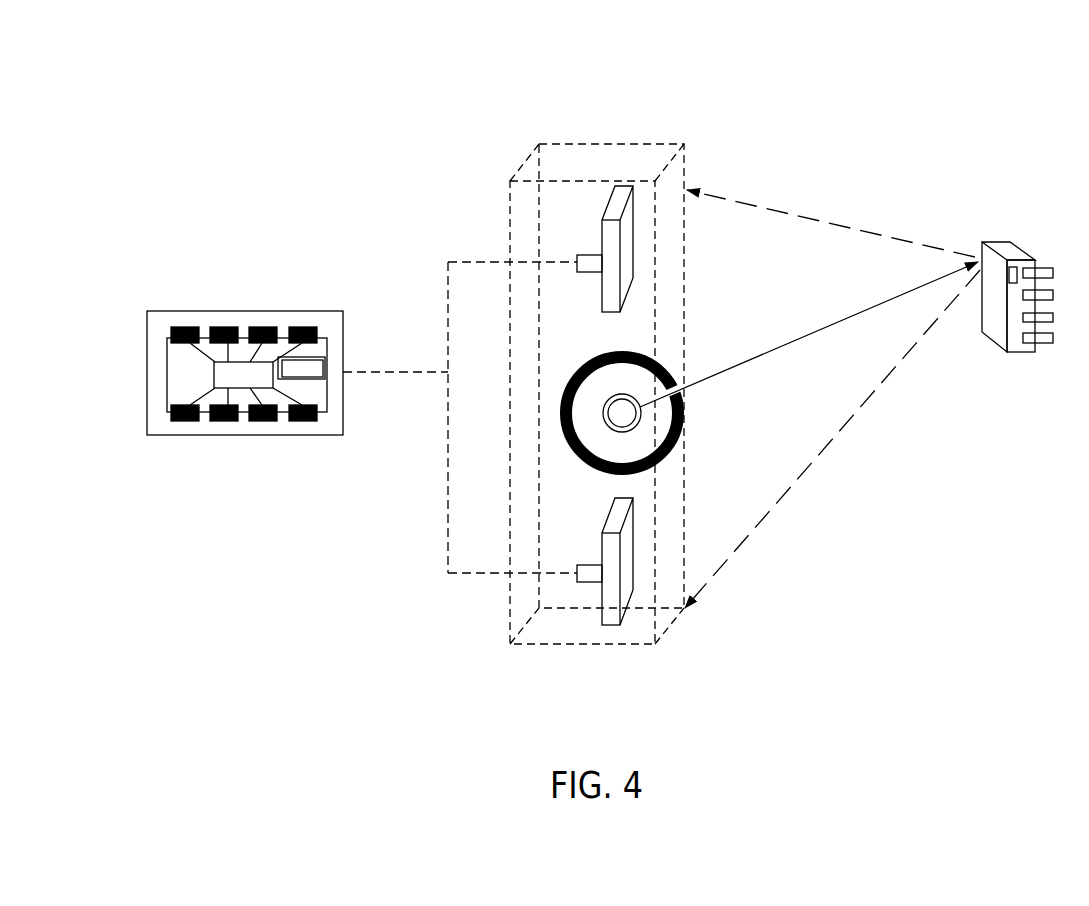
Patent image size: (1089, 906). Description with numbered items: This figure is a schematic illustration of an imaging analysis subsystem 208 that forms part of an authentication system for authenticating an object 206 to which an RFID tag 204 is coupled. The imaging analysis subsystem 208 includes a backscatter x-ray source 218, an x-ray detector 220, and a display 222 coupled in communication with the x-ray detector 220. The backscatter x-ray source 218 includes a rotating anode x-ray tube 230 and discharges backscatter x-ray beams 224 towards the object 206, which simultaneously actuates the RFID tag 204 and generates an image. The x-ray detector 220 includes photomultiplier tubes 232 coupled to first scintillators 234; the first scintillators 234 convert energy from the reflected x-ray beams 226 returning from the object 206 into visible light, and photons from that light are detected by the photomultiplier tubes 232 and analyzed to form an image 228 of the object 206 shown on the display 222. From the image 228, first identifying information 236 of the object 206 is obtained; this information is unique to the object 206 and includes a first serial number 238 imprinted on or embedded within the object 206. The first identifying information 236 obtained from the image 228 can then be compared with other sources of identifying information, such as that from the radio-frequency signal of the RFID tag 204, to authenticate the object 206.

The imaging analysis subsystem 208 is at (312, 70).
The image 228 is at (182, 317).
The display 222 is at (247, 310).
The first identifying information 236 is at (322, 338).
The first serial number 238 is at (313, 377).
The backscatter x-ray source 218 is at (567, 365).
The x-ray detector 220 is at (550, 395).
The first scintillators 234 is at (612, 190).
The photomultiplier tubes 232 is at (595, 255).
The rotating anode x-ray tube 230 is at (610, 332).
The backscatter x-ray beams 224 is at (820, 328).
The reflected x-ray beams 226 is at (805, 215).
The object 206 is at (1002, 240).
The RFID tag 204 is at (1015, 268).